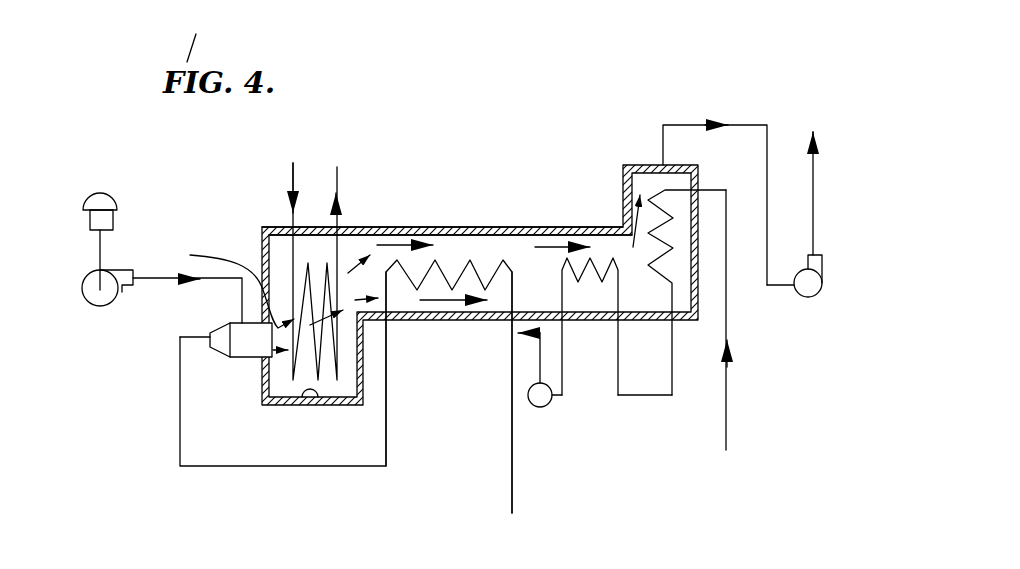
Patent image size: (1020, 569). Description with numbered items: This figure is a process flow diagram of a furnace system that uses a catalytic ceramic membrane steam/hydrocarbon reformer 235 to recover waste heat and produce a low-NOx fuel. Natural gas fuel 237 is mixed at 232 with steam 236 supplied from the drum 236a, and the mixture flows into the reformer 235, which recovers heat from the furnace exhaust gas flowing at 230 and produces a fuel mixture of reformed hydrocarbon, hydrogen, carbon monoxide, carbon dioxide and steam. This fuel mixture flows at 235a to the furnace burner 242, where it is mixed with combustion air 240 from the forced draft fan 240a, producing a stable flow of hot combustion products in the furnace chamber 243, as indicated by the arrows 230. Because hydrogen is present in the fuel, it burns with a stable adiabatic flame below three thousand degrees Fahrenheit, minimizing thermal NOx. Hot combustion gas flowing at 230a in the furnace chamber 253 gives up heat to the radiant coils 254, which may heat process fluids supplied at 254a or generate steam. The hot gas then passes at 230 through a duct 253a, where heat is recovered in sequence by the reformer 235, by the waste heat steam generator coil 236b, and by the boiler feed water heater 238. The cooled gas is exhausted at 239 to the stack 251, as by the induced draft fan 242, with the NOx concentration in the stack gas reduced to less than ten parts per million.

The furnace exhaust gas flow 230 is at (393, 243).
The hot combustion gas flow 230a is at (212, 281).
The mixing point 232 is at (505, 332).
The catalytic ceramic membrane steam/hydrocarbon reformer 235 is at (448, 255).
The fuel mixture flow 235a is at (198, 468).
The steam supply 236 is at (535, 368).
The drum 236a is at (553, 400).
The waste heat steam generator coil 236b is at (597, 284).
The natural gas fuel 237 is at (512, 478).
The boiler feed water heater 238 is at (640, 217).
The exhaust 239 is at (757, 123).
The combustion air 240 is at (160, 283).
The forced draft fan 240a is at (103, 297).
The furnace burner 242 is at (247, 340).
The furnace chamber 243 is at (297, 400).
The stack 251 is at (817, 183).
The furnace chamber 253 is at (353, 407).
The duct 253a is at (510, 227).
The radiant coils 254 is at (295, 262).
The process fluid supply 254a is at (293, 183).